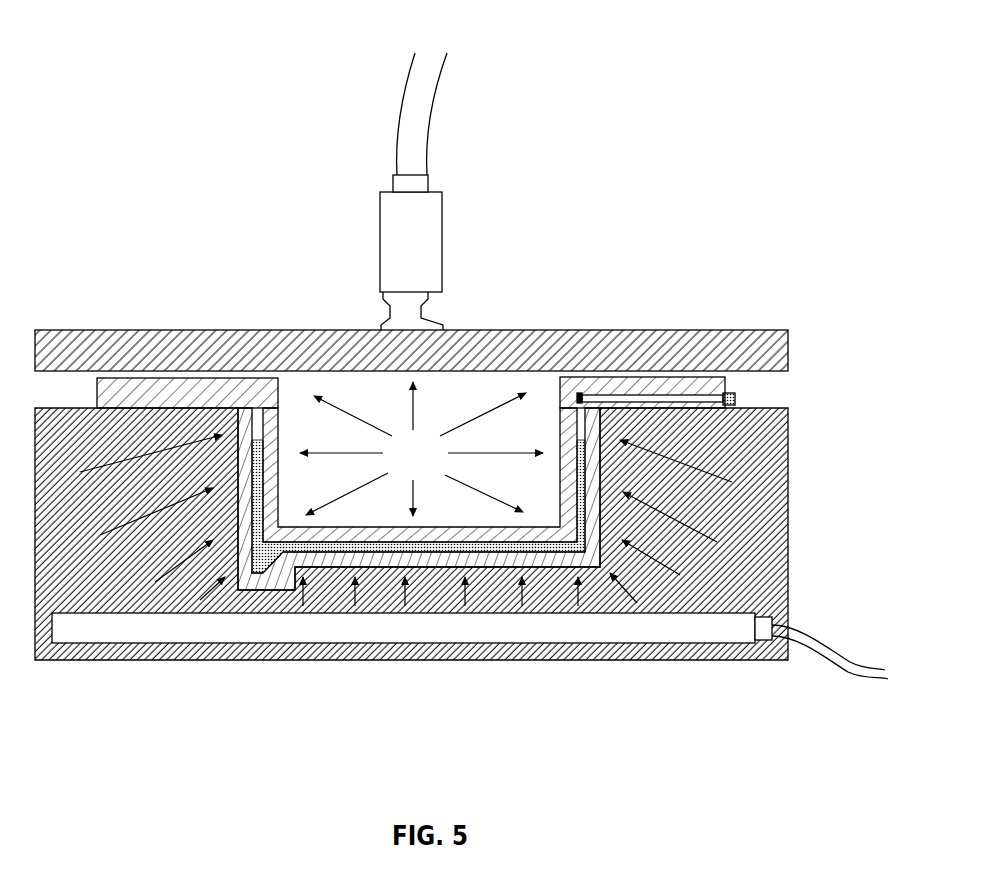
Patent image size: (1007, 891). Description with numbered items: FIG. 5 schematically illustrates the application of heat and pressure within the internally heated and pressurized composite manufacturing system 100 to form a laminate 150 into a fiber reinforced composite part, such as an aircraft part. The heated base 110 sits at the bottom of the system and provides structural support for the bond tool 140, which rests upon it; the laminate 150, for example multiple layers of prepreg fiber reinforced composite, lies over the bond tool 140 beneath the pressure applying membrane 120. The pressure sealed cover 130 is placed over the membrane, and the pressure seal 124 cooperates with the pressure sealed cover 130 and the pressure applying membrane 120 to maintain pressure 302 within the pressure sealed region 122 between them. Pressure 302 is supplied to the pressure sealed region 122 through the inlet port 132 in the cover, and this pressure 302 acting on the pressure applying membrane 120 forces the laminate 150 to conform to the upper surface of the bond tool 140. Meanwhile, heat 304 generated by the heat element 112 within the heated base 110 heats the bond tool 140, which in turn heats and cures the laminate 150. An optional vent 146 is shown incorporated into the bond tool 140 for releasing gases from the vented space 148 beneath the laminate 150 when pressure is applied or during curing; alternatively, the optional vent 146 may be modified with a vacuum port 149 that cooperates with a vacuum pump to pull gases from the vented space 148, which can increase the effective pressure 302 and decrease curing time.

The composite manufacturing system 100 is at (117, 138).
The heated base 110 is at (90, 586).
The heat element 112 is at (318, 632).
The pressure applying membrane 120 is at (97, 387).
The pressure sealed region 122 is at (466, 411).
The pressure seal 124 is at (177, 382).
The pressure sealed cover 130 is at (524, 341).
The inlet port 132 is at (407, 313).
The bond tool 140 is at (212, 402).
The optional vent 146 is at (697, 397).
The vented space 148 is at (579, 394).
The vacuum port 149 is at (735, 398).
The laminate 150 is at (493, 545).
The pressure 302 is at (340, 398).
The heat 304 is at (181, 598).